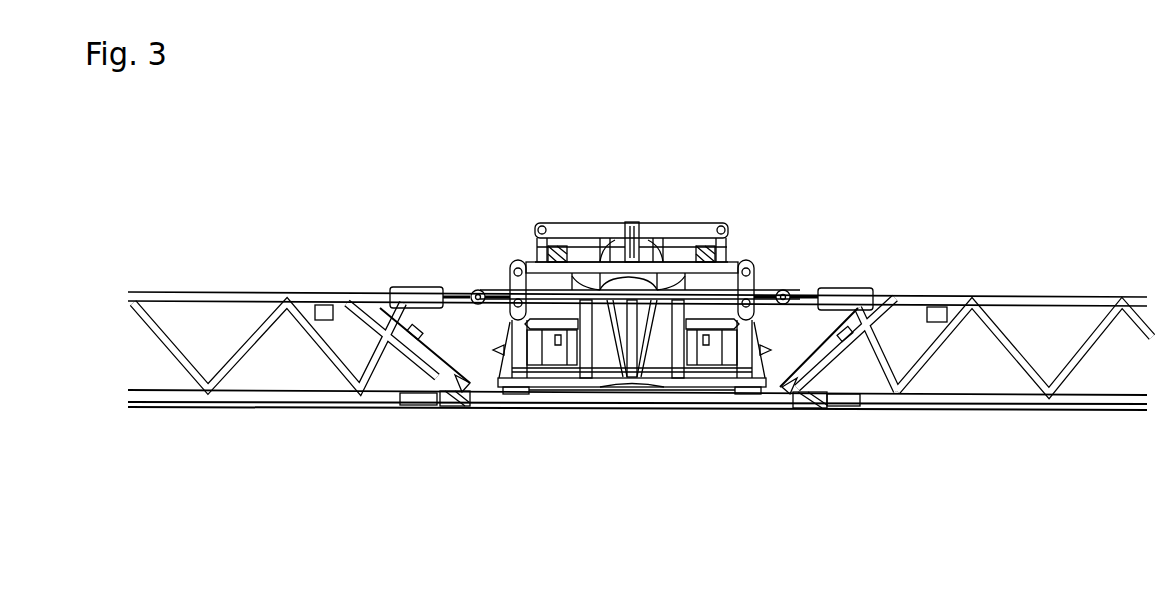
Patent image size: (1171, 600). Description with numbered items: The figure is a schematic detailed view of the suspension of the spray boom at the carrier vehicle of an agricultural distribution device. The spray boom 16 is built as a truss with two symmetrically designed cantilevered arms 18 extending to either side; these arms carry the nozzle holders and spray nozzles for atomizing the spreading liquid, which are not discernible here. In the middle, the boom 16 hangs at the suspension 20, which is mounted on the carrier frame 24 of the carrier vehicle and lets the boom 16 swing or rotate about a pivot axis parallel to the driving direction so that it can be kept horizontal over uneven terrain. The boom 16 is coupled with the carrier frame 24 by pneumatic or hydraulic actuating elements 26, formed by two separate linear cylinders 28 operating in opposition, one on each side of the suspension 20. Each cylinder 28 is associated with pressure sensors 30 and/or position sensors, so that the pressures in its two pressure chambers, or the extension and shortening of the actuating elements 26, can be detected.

The spray boom 16 is at (640, 408).
The cantilevered arms 18 is at (283, 422).
The suspension 20 is at (656, 345).
The carrier frame 24 is at (683, 214).
The actuating elements 26 is at (659, 428).
The linear cylinders 28 is at (551, 342).
The pressure sensors 30 is at (712, 342).